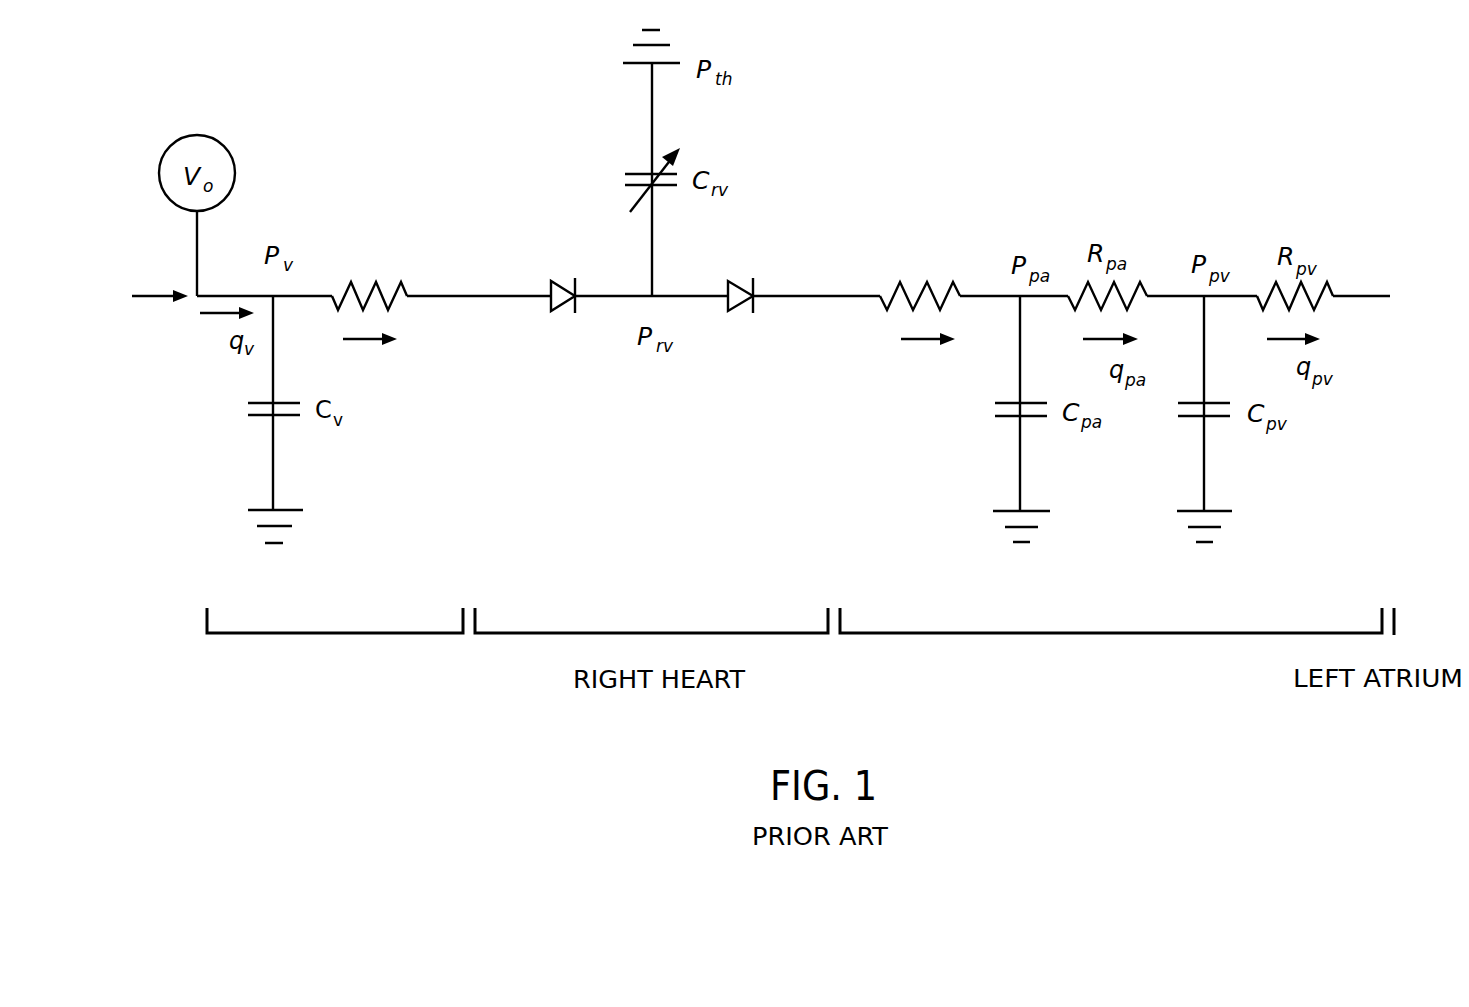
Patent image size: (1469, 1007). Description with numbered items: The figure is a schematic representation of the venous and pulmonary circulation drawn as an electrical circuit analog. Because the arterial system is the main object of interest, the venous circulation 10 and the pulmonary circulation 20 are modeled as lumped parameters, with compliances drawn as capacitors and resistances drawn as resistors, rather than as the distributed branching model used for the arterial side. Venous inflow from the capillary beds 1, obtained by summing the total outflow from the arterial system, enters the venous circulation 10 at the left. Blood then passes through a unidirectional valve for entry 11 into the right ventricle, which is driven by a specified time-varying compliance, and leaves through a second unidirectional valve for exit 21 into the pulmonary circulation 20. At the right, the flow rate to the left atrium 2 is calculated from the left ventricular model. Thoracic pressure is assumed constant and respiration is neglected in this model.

The venous inflow from the capillary beds 1 is at (160, 343).
The flow rate to the left atrium 2 is at (1371, 326).
The venous circulation 10 is at (335, 678).
The unidirectional valve for entry of blood into the right ventricle 11 is at (369, 355).
The pulmonary circulation 20 is at (1111, 678).
The unidirectional valve for exit of blood from the right ventricle 21 is at (920, 326).